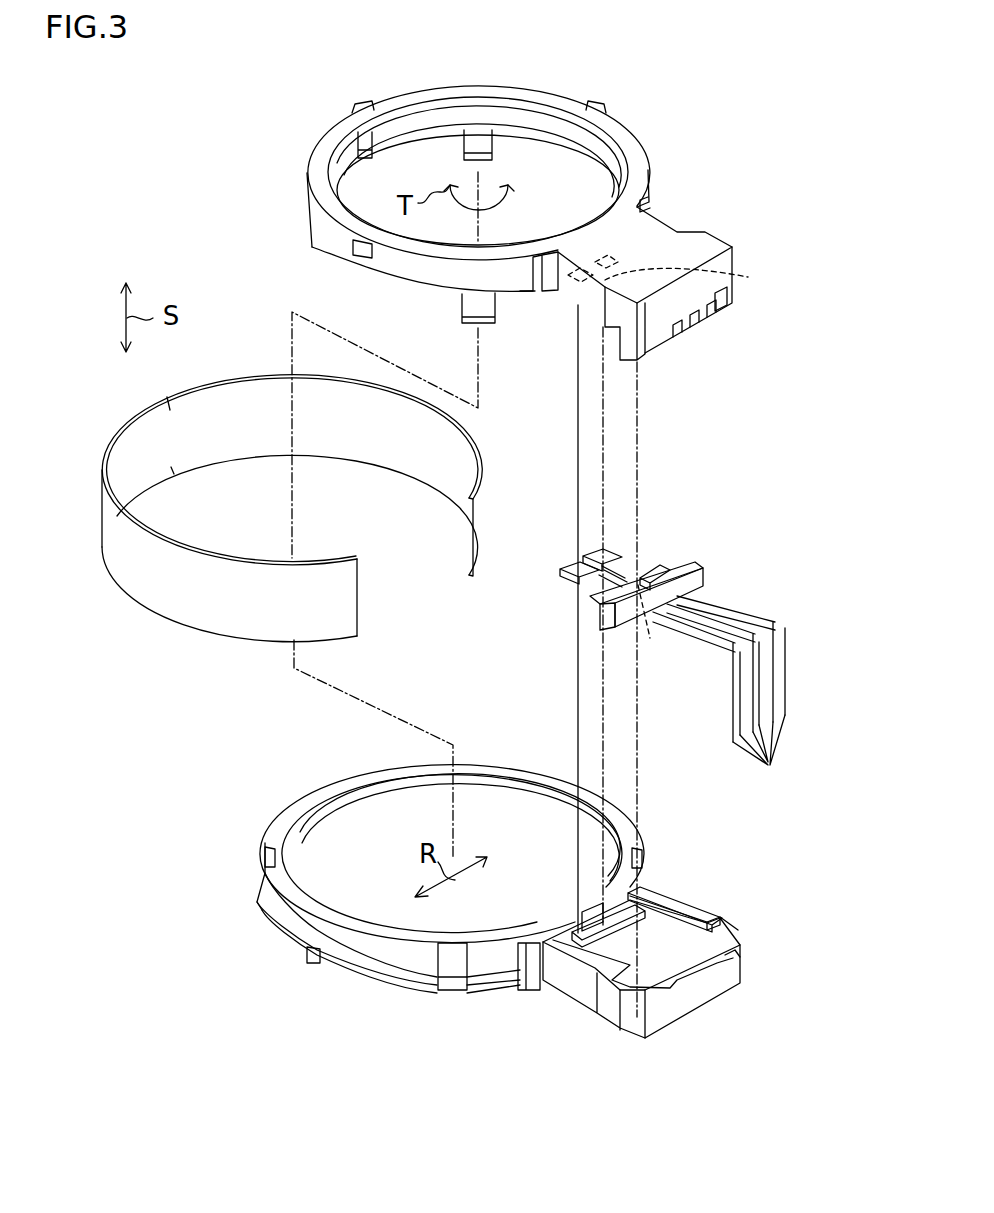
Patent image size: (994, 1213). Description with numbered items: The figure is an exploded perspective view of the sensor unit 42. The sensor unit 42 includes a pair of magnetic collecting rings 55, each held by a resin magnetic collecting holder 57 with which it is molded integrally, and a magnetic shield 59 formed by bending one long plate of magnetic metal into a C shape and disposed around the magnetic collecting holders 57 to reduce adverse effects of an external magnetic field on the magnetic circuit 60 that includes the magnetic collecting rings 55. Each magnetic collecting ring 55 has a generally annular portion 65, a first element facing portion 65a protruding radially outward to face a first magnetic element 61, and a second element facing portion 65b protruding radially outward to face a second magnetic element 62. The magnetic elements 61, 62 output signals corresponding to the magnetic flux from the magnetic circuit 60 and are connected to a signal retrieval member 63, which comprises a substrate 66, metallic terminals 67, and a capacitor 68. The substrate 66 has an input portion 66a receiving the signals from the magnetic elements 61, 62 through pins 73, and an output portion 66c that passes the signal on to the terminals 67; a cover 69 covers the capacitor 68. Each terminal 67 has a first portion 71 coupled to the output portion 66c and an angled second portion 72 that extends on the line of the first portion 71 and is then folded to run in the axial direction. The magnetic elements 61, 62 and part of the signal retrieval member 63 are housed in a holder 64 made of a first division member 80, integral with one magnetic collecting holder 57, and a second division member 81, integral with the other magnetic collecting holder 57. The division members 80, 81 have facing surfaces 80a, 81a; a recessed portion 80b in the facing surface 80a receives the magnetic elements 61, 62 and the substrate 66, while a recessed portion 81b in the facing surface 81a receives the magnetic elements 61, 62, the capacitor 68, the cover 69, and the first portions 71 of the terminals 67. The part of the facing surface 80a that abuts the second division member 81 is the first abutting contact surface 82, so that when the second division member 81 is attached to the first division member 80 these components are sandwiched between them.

The sensor unit 42 is at (438, 1060).
The magnetic collecting ring 55 is at (447, 514).
The magnetic collecting holder 57 is at (336, 137).
The magnetic shield 59 is at (177, 592).
The magnetic circuit 60 is at (447, 503).
The first magnetic element 61 is at (597, 553).
The second magnetic element 62 is at (568, 567).
The signal retrieval member 63 is at (670, 652).
The holder 64 is at (677, 621).
The annular portion 65 is at (402, 127).
The first element facing portion 65a is at (600, 255).
The second element facing portion 65b is at (580, 282).
The substrate 66 is at (696, 569).
The input portion 66a is at (655, 575).
The output portion 66c is at (730, 600).
The terminal 67 is at (746, 686).
The capacitor 68 is at (662, 626).
The cover 69 is at (605, 618).
The first portion 71 is at (763, 605).
The second portion 72 is at (774, 758).
The pin 73 is at (598, 582).
The first division member 80 is at (677, 972).
The facing surface 80a is at (740, 967).
The recessed portion 80b is at (627, 917).
The second division member 81 is at (662, 292).
The facing surface 81a is at (657, 330).
The recessed portion 81b is at (657, 333).
The first abutting contact surface 82 is at (583, 917).